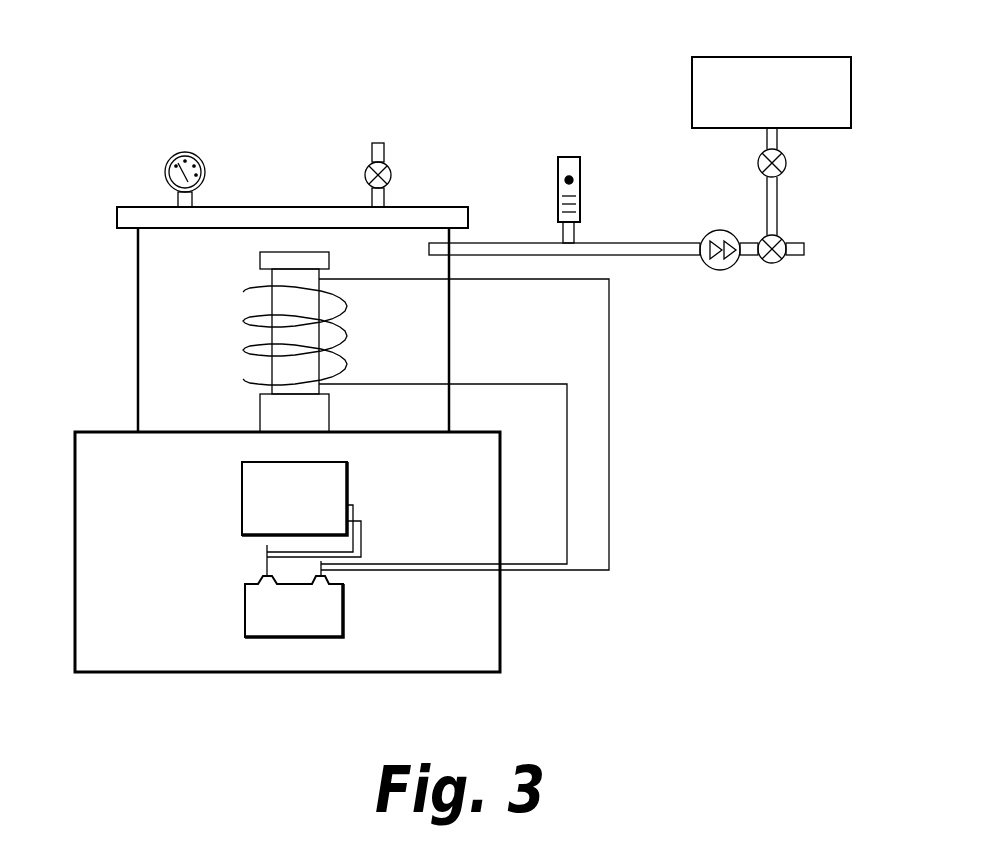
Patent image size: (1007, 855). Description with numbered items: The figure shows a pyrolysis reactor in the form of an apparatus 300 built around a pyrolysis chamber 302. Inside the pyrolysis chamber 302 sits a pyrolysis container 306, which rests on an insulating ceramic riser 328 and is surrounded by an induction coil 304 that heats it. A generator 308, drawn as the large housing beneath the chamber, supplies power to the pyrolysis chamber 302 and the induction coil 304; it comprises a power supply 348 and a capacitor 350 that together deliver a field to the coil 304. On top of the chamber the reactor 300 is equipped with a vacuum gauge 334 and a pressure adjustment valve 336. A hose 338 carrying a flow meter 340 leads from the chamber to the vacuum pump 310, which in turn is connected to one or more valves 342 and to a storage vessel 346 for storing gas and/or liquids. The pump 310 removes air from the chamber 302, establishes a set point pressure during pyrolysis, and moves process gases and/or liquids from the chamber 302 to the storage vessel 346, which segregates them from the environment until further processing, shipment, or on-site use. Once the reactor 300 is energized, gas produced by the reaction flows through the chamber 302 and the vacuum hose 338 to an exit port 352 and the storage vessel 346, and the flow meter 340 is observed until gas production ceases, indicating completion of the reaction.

The apparatus 300 is at (134, 178).
The pyrolysis chamber 302 is at (133, 365).
The induction coil 304 is at (215, 350).
The pyrolysis container 306 is at (345, 365).
The generator 308 is at (120, 685).
The vacuum pump 310 is at (707, 277).
The ceramic riser 328 is at (332, 412).
The vacuum gauge 334 is at (196, 150).
The pressure adjustment valve 336 is at (380, 143).
The hose 338 is at (505, 242).
The flow meter 340 is at (568, 157).
The valve 342 is at (780, 270).
The storage vessel 346 is at (795, 57).
The power supply 348 is at (235, 498).
The capacitor 350 is at (238, 600).
The exit port 352 is at (750, 165).